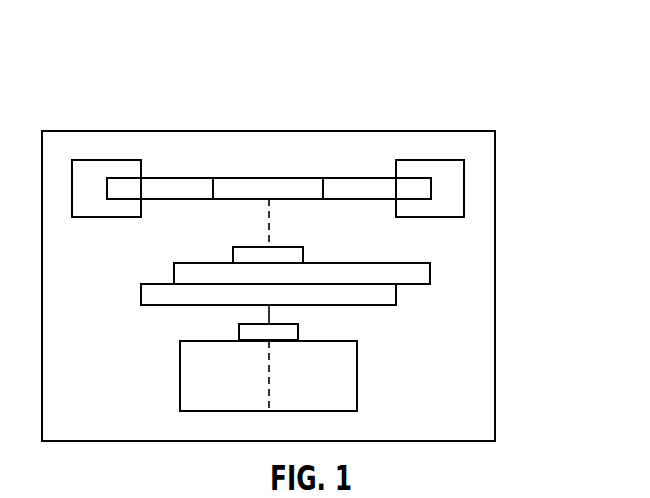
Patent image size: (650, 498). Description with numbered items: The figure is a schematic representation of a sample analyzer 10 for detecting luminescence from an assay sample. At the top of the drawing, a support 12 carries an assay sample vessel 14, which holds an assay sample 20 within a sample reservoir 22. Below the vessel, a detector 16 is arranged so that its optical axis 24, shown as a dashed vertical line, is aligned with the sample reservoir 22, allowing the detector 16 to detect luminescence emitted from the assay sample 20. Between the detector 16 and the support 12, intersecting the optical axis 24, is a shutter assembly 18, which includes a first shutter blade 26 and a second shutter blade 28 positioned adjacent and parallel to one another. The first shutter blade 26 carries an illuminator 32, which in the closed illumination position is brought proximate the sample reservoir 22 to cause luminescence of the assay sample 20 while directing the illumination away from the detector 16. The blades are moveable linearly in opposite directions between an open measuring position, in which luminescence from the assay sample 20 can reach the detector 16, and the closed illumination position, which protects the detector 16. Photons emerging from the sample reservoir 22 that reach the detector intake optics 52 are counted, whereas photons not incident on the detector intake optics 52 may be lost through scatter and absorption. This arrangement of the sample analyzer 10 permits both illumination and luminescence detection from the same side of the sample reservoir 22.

The sample analyzer 10 is at (526, 46).
The support 12 is at (464, 190).
The assay sample vessel 14 is at (173, 186).
The detector 16 is at (357, 375).
The shutter assembly 18 is at (303, 286).
The assay sample 20 is at (263, 188).
The sample reservoir 22 is at (268, 188).
The optical axis 24 is at (268, 365).
The first shutter blade 26 is at (218, 263).
The second shutter blade 28 is at (179, 307).
The illuminator 32 is at (287, 247).
The detector intake optics 52 is at (298, 333).